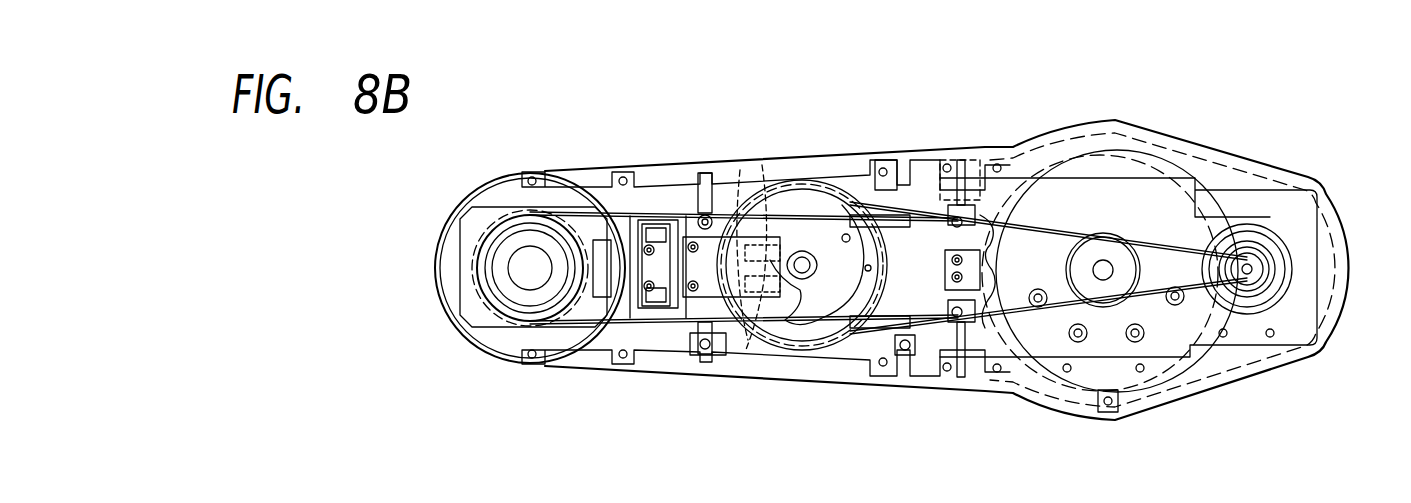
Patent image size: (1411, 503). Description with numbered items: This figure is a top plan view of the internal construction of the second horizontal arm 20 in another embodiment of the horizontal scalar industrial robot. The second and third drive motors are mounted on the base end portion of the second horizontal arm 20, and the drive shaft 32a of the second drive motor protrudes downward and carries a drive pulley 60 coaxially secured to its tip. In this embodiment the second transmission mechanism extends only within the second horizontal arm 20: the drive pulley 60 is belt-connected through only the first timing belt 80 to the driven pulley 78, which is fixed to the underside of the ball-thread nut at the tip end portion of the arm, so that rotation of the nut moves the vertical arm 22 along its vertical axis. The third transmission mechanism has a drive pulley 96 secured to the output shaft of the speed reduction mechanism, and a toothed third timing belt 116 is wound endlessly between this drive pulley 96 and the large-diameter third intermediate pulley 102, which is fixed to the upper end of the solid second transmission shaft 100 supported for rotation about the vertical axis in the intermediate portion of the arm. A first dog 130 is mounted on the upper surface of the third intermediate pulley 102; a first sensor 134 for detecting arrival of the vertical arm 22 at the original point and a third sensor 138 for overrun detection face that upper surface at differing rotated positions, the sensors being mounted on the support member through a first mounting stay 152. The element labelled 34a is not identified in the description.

The second horizontal arm 20 is at (979, 394).
The vertical arm 22 is at (525, 272).
The drive shaft 32a is at (1130, 293).
The shaft 34a is at (1244, 266).
The drive pulley 60 is at (1117, 252).
The driven pulley 78 is at (505, 212).
The first timing belt 80 is at (657, 330).
The drive pulley 96 is at (1252, 285).
The second transmission shaft 100 is at (806, 280).
The third intermediate pulley 102 is at (807, 195).
The third timing belt 116 is at (1052, 232).
The first dog 130 is at (827, 245).
The first sensor 134 is at (764, 352).
The third sensor 138 is at (760, 163).
The first mounting stay 152 is at (745, 340).